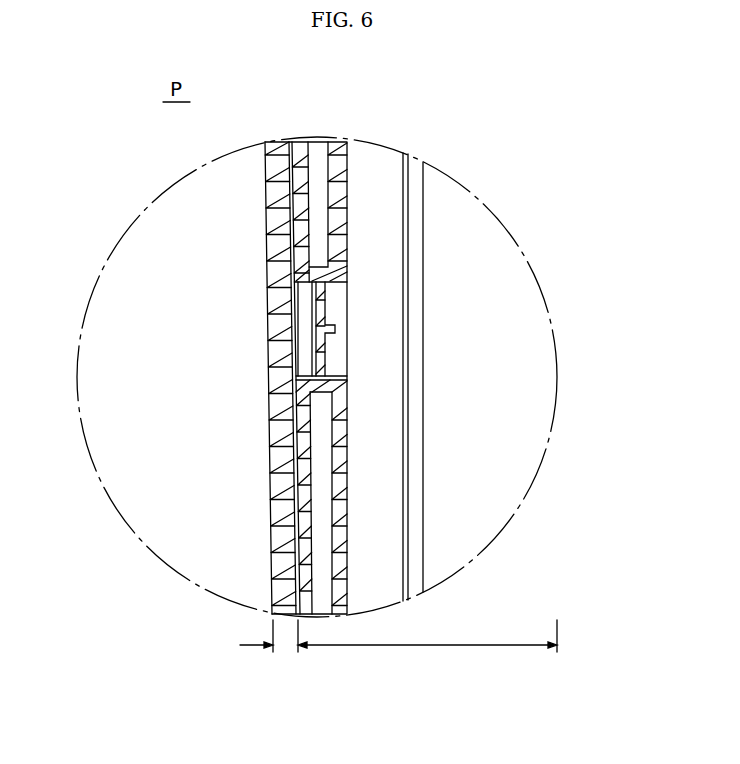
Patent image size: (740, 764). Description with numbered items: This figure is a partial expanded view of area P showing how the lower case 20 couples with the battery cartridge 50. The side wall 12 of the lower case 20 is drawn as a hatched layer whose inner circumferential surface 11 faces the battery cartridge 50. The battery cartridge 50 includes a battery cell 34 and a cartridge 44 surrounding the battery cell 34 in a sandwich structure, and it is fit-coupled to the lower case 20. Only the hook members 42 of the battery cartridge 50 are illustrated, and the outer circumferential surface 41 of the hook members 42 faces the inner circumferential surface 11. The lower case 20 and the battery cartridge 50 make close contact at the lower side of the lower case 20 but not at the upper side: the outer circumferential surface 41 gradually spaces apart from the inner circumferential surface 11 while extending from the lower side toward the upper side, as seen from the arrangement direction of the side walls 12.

The inner circumferential surface 11 is at (302, 548).
The side wall 12 is at (270, 347).
The lower case 20 is at (270, 648).
The battery cell 34 is at (527, 380).
The outer circumferential surface 41 is at (300, 448).
The hook member 42 is at (308, 172).
The cartridge 44 is at (373, 160).
The battery cartridge 50 is at (427, 648).